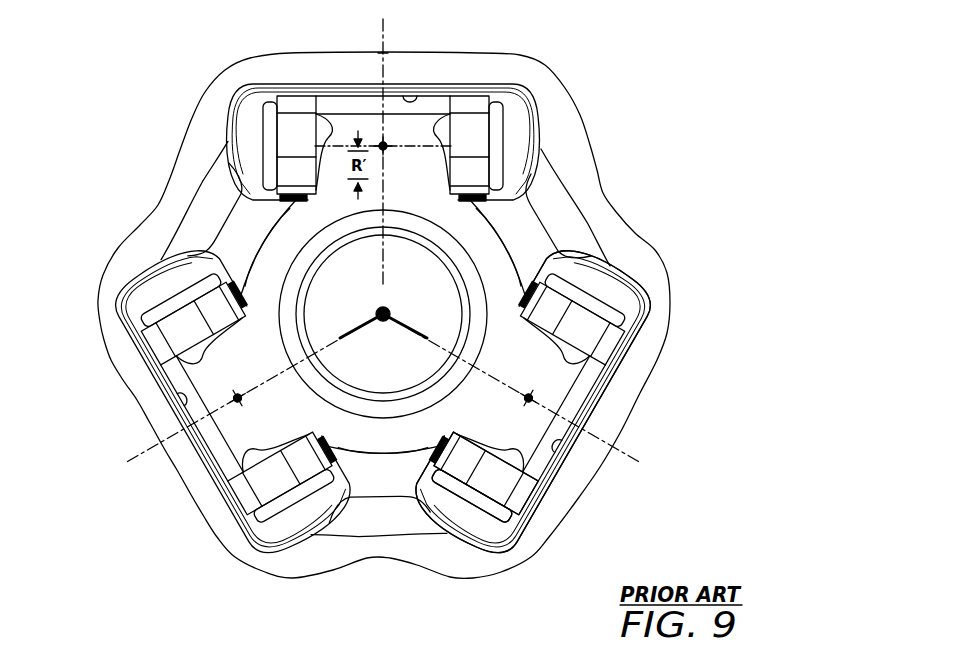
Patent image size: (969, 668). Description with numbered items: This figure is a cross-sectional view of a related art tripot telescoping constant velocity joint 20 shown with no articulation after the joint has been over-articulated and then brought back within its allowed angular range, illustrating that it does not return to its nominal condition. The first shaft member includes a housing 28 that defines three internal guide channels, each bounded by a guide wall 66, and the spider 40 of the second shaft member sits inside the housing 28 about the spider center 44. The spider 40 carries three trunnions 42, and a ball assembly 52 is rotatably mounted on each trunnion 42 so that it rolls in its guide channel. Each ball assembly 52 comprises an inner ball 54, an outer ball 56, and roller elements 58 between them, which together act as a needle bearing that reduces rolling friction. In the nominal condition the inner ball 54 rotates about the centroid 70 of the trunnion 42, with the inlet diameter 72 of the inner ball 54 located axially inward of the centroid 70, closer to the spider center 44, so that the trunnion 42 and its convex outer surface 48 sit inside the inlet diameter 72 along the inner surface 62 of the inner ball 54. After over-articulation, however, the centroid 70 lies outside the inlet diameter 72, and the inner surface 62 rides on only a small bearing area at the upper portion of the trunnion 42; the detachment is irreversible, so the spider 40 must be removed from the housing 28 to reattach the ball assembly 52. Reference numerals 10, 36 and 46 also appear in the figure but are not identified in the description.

The prior art tripod joint 10 is at (657, 131).
The telescoping constant velocity joint 20 is at (642, 234).
The housing 28 is at (600, 197).
The roller track channel 36 is at (521, 507).
The spider 40 is at (248, 238).
The trunnion 42 is at (537, 374).
The spider center 44 is at (375, 313).
The trunnion axis 46 is at (385, 42).
The convex outer surface 48 is at (307, 150).
The ball assembly 52 is at (526, 107).
The inner ball 54 is at (487, 144).
The outer ball 56 is at (518, 131).
The roller elements 58 is at (494, 118).
The inner surface 62 is at (315, 127).
The guide wall 66 is at (412, 98).
The centroid 70 is at (385, 148).
The inlet diameter 72 is at (433, 158).